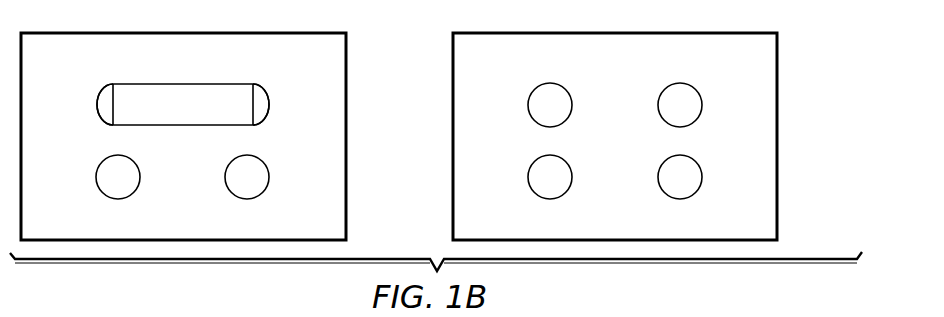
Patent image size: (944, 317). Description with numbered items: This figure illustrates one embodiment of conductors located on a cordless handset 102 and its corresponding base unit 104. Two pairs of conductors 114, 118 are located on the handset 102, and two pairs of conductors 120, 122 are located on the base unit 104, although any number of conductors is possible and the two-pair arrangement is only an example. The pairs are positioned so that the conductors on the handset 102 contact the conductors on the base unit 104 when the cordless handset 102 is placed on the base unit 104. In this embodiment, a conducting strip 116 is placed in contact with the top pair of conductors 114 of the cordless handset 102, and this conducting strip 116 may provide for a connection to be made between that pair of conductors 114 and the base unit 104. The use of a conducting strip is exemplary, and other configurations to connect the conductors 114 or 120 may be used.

The handset 102 is at (350, 98).
The base unit 104 is at (779, 98).
The conductors 114 is at (101, 92).
The conducting strip 116 is at (183, 127).
The conductors 118 is at (229, 191).
The conductors 120 is at (661, 92).
The conductors 122 is at (661, 190).